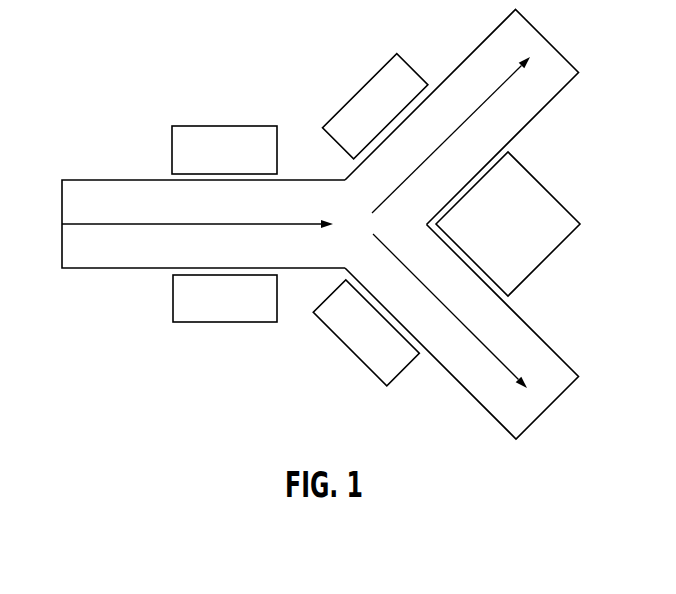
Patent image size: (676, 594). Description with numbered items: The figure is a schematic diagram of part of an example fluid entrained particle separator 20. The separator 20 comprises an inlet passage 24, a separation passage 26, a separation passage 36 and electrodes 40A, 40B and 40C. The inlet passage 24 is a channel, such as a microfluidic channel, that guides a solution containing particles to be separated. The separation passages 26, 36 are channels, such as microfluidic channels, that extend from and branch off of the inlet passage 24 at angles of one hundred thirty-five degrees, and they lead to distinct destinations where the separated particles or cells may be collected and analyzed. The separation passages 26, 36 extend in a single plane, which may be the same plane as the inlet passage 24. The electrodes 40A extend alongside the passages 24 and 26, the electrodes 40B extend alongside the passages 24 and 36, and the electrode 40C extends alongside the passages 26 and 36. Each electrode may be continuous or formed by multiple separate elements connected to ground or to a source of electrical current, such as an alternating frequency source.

The fluid entrained particle separator 20 is at (106, 47).
The inlet passage 24 is at (100, 180).
The separation passage 26 is at (490, 33).
The separation passage 36 is at (478, 403).
The electrodes 40A is at (227, 126).
The electrodes 40B is at (227, 322).
The electrode 40C is at (545, 187).